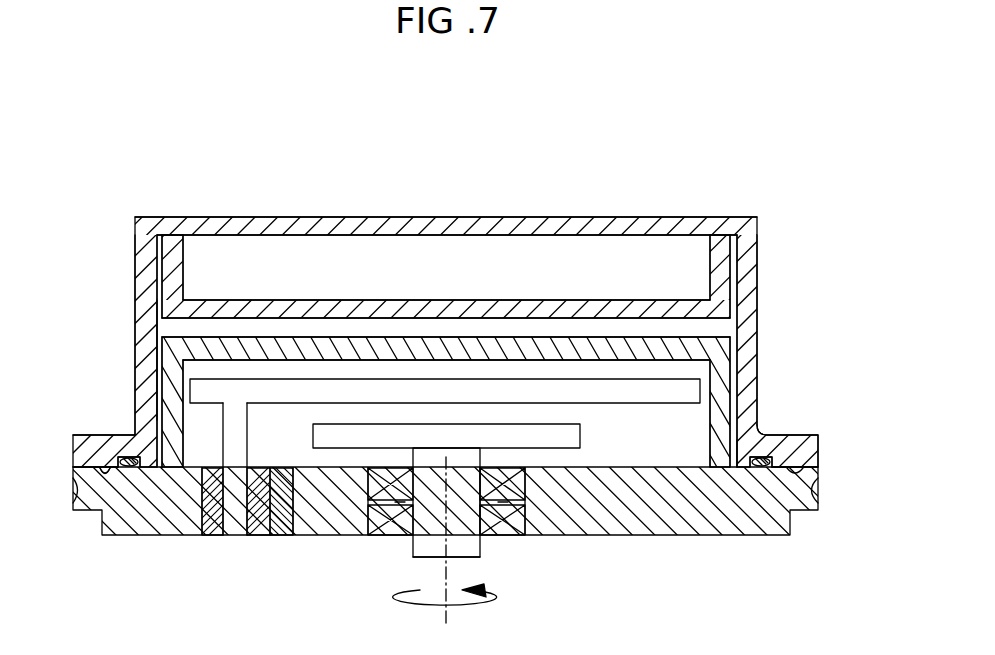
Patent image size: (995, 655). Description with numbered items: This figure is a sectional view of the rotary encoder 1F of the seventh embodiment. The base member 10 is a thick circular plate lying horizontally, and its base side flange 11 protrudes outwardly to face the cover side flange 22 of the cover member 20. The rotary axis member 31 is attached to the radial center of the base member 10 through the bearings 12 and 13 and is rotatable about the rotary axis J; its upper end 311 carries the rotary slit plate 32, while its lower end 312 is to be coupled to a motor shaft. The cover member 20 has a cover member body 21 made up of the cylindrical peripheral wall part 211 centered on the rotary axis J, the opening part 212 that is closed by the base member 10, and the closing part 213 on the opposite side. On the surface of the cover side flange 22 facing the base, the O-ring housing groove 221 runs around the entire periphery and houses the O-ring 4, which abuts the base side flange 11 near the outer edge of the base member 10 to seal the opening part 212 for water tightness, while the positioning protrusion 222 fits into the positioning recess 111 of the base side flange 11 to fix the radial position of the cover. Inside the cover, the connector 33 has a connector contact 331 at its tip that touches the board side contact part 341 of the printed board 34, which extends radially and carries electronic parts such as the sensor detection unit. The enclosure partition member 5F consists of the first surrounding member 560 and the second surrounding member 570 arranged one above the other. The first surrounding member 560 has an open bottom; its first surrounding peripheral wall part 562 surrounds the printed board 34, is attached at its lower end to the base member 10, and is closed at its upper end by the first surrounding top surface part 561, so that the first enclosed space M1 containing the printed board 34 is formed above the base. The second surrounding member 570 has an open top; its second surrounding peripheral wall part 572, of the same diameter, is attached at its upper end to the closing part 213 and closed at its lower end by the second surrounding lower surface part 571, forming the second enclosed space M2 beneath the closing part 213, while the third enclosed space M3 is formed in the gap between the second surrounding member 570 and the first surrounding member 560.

The rotary encoder 1F is at (780, 155).
The base member 10 is at (776, 554).
The base side flange 11 is at (83, 495).
The positioning recess 111 is at (100, 470).
The bearing 12 is at (365, 483).
The bearing 13 is at (363, 528).
The cover member 20 is at (53, 370).
The cover member body 21 is at (140, 372).
The cylindrical peripheral wall part 211 is at (148, 362).
The opening part 212 is at (732, 468).
The closing part 213 is at (468, 218).
The cover side flange 22 is at (107, 435).
The O-ring housing groove 221 is at (122, 460).
The positioning protrusion 222 is at (107, 475).
The rotary axis member 31 is at (410, 543).
The upper end 311 is at (533, 445).
The lower end 312 is at (423, 560).
The rotary slit plate 32 is at (582, 447).
The connector 33 is at (213, 512).
The connector contact 331 is at (243, 398).
The printed board 34 is at (648, 403).
The board side contact part 341 is at (242, 392).
The O-ring 4 is at (128, 465).
The enclosure partition member 5F is at (840, 250).
The second surrounding member 570 is at (746, 296).
The second surrounding lower surface part 571 is at (303, 308).
The second surrounding peripheral wall part 572 is at (175, 275).
The first surrounding member 560 is at (746, 338).
The first surrounding top surface part 561 is at (358, 348).
The first surrounding peripheral wall part 562 is at (173, 382).
The first enclosed space M1 is at (613, 368).
The second enclosed space M2 is at (573, 267).
The third enclosed space M3 is at (237, 330).
The rotary axis J is at (446, 610).